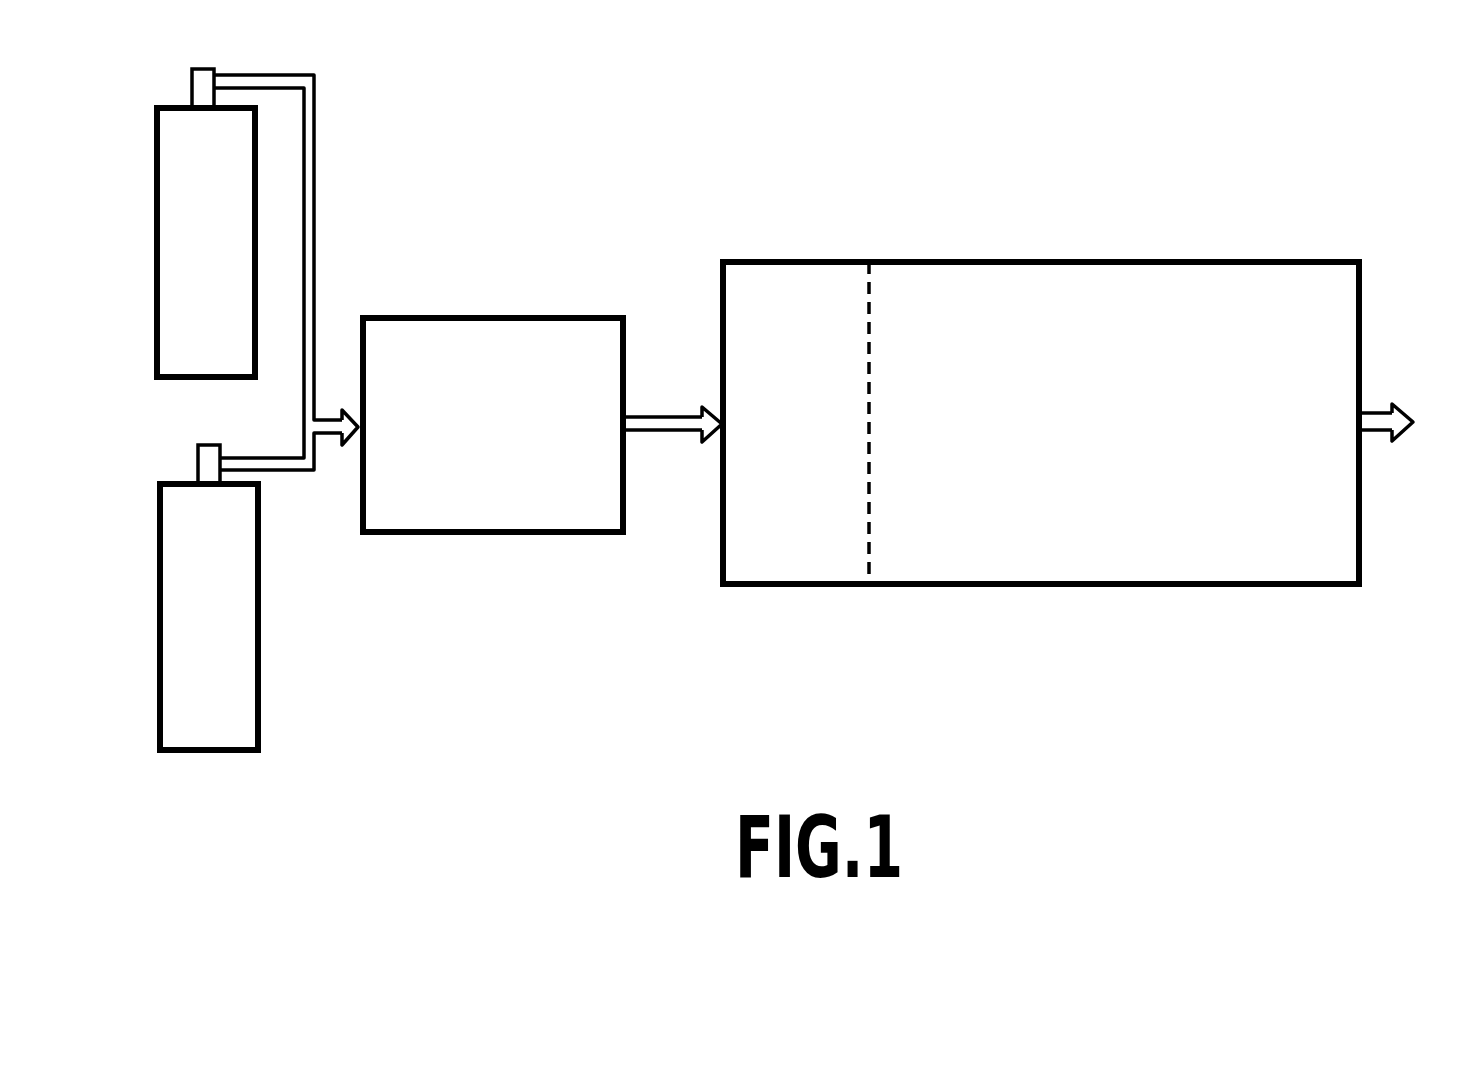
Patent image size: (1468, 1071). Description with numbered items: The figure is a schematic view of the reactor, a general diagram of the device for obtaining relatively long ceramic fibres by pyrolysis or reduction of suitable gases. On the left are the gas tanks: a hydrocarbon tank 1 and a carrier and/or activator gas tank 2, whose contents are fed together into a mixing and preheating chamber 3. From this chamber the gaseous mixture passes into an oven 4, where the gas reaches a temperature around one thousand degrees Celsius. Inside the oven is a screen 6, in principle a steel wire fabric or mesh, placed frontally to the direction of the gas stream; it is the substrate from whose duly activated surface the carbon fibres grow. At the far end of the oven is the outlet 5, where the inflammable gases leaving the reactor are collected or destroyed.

The hydrocarbon tank 1 is at (210, 175).
The carrier and/or activator gas tank 2 is at (225, 638).
The mixing and preheating chamber 3 is at (485, 367).
The oven 4 is at (1112, 325).
The outlet 5 is at (1410, 417).
The screen 6 is at (890, 302).